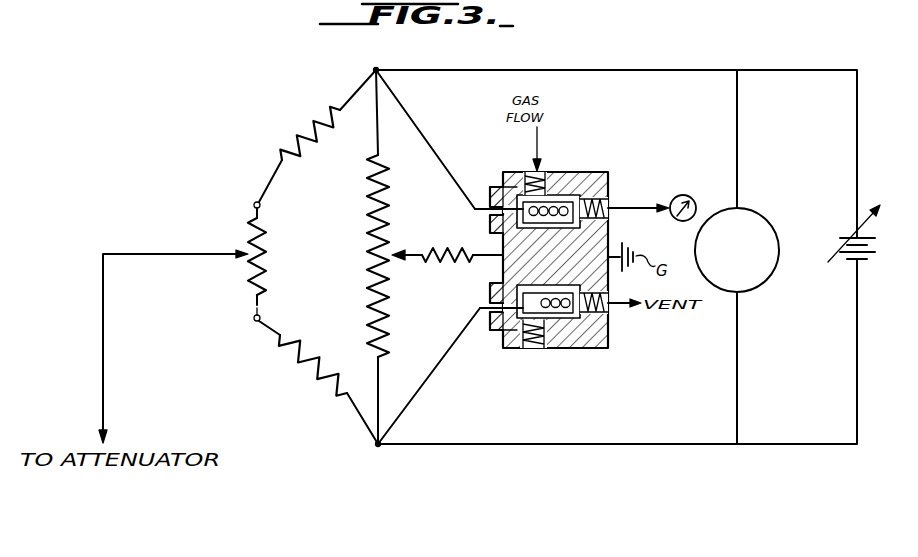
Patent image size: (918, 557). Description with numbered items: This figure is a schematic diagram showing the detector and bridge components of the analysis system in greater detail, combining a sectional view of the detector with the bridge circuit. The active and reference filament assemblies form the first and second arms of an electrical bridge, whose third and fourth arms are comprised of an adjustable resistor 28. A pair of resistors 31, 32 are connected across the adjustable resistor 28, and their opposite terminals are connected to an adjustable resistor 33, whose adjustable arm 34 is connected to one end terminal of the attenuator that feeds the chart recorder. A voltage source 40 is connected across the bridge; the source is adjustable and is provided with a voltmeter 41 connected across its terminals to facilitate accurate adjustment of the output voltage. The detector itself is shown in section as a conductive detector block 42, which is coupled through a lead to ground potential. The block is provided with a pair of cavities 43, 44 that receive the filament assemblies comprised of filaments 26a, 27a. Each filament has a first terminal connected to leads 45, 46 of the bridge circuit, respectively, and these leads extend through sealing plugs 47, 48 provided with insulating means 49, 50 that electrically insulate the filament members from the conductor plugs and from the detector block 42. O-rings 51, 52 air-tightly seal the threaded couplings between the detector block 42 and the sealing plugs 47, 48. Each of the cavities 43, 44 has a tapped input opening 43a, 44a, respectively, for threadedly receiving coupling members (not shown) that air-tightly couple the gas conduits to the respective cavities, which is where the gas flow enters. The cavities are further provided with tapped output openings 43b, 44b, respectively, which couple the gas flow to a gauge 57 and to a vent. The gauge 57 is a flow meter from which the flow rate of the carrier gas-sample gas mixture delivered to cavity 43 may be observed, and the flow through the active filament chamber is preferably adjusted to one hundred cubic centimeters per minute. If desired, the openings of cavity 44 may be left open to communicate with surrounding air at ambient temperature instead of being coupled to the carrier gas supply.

The resistor 31 is at (291, 140).
The resistor 32 is at (292, 382).
The adjustable resistor 33 is at (247, 250).
The adjustable arm 34 is at (238, 262).
The adjustable resistor 28 is at (390, 211).
The lead 45 is at (590, 69).
The lead 46 is at (483, 445).
The conductive detector block 42 is at (612, 186).
The cavity 43 is at (582, 187).
The cavity 44 is at (573, 347).
The tapped input opening 43a is at (547, 173).
The tapped output opening 43b is at (614, 211).
The tapped input opening 44a is at (540, 347).
The tapped output opening 44b is at (611, 312).
The filament 26a is at (560, 205).
The filament 27a is at (552, 347).
The sealing plug 47 is at (493, 190).
The sealing plug 48 is at (492, 288).
The insulating means 49 is at (489, 213).
The insulating means 50 is at (484, 307).
The O-ring 51 is at (495, 186).
The O-ring 52 is at (492, 338).
The gauge 57 is at (691, 197).
The voltmeter 41 is at (775, 203).
The voltage source 40 is at (838, 243).